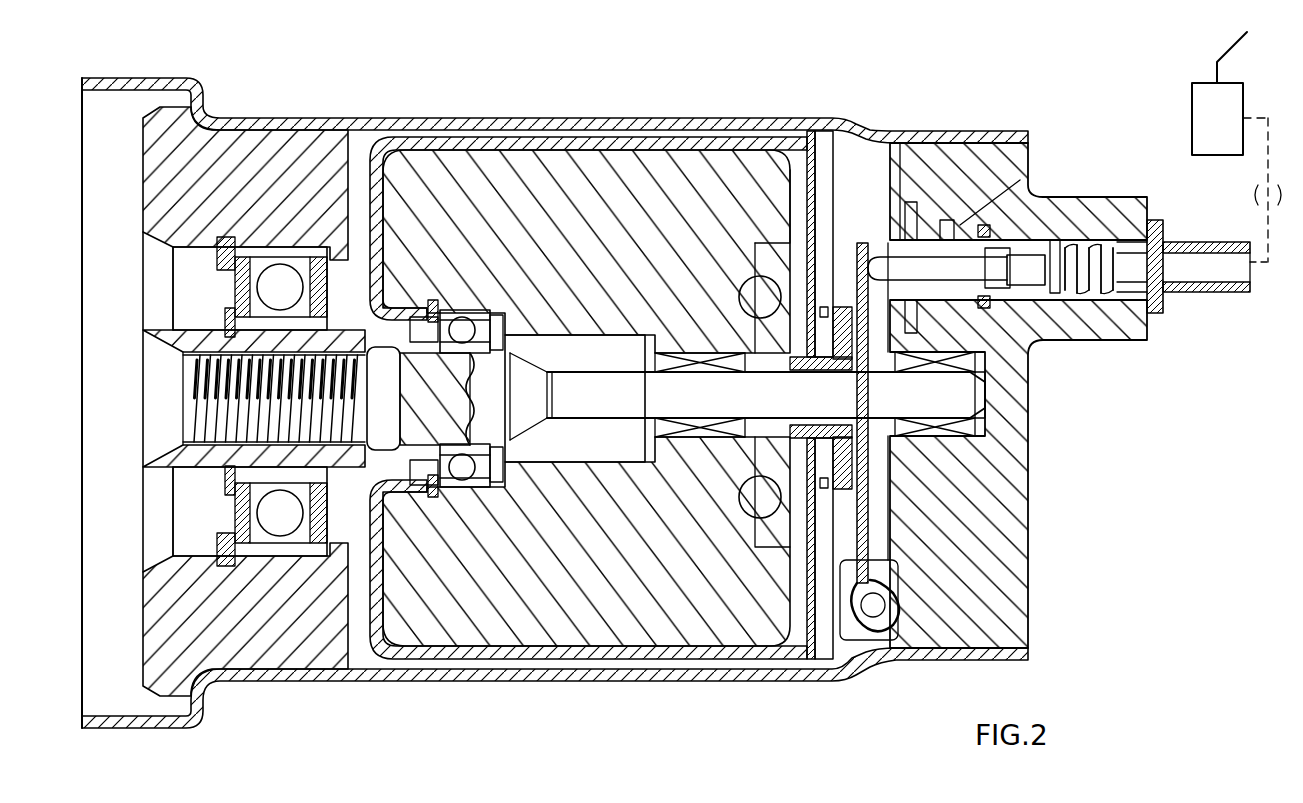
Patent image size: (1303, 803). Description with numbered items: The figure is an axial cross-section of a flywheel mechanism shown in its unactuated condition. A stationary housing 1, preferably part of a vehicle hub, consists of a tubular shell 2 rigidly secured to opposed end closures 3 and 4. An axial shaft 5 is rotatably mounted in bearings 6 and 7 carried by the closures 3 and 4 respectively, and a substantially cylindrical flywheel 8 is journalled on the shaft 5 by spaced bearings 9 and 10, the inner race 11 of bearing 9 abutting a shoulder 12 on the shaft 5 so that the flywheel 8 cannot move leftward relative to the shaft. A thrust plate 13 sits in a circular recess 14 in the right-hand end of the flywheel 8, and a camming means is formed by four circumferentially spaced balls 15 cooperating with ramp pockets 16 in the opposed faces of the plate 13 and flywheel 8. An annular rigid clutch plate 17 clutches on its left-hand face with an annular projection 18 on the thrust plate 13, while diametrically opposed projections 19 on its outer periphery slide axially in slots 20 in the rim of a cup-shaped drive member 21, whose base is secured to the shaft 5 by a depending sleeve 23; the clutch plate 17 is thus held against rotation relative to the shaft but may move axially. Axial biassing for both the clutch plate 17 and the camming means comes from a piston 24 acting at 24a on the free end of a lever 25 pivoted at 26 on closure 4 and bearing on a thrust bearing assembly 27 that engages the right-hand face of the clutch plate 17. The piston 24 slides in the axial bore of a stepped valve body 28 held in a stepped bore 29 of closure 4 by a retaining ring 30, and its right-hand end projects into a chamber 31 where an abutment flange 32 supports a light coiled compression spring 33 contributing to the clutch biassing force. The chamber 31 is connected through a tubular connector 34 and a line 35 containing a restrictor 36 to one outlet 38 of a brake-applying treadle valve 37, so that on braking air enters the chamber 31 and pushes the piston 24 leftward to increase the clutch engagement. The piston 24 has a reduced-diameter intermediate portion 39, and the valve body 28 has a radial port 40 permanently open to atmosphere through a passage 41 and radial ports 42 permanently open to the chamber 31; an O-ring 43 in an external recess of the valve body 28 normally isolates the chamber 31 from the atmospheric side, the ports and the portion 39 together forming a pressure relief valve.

The stationary housing 1 is at (478, 681).
The tubular shell 2 is at (530, 676).
The end closure 3 is at (310, 628).
The end closure 4 is at (985, 585).
The axial shaft 5 is at (605, 392).
The bearing 6 is at (262, 545).
The bearing 7 is at (975, 453).
The flywheel 8 is at (545, 579).
The bearing 9 is at (462, 487).
The bearing 10 is at (700, 445).
The inner race 11 is at (485, 343).
The shoulder 12 is at (447, 330).
The thrust plate 13 is at (782, 515).
The circular recess 14 is at (775, 255).
The balls 15 is at (755, 300).
The ramp pockets 16 is at (740, 297).
The clutch plate 17 is at (840, 560).
The annular projection 18 is at (800, 295).
The projections 19 is at (810, 135).
The axial slots 20 is at (830, 130).
The cup-shaped drive member 21 is at (612, 655).
The depending sleeve 23 is at (398, 318).
The piston 24 is at (1030, 285).
The piston acting point 24a is at (900, 257).
The lever 25 is at (870, 500).
The pivot 26 is at (885, 615).
The thrust bearing assembly 27 is at (820, 560).
The stepped valve body 28 is at (915, 205).
The stepped bore 29 is at (900, 200).
The retaining ring 30 is at (947, 222).
The chamber 31 is at (1090, 260).
The abutment flange 32 is at (1150, 240).
The coiled compression spring 33 is at (1125, 300).
The tubular connector 34 is at (1207, 292).
The line 35 is at (1268, 270).
The restrictor 36 is at (1256, 196).
The brake-applying treadle valve 37 is at (1212, 105).
The outlet 38 is at (1265, 118).
The intermediate portion of reduced diameter 39 is at (990, 265).
The radial port 40 is at (965, 225).
The passage 41 is at (1053, 240).
The radial ports 42 is at (990, 235).
The O-ring 43 is at (985, 305).